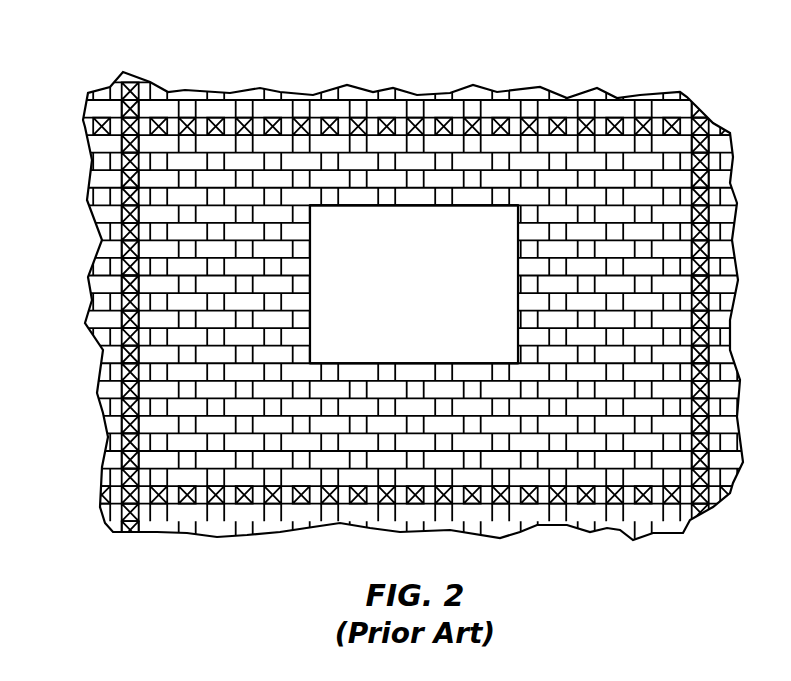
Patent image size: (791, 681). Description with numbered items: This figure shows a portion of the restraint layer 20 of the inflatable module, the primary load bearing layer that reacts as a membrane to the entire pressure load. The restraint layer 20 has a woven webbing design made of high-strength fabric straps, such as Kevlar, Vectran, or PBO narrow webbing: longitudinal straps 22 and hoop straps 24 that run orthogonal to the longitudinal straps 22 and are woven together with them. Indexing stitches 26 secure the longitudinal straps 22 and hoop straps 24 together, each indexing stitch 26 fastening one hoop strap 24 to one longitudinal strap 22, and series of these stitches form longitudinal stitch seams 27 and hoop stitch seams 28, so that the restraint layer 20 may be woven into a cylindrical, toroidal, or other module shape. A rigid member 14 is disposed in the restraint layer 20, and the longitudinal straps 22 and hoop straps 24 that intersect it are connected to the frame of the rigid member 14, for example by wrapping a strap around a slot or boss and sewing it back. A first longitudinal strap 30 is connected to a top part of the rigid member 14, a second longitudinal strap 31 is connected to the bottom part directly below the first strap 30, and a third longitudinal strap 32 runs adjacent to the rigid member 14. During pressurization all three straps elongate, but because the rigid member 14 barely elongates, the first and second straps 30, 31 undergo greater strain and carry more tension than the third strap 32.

The restraint layer 20 is at (395, 296).
The longitudinal straps 22 is at (332, 158).
The hoop straps 24 is at (177, 267).
The indexing stitches 26 is at (530, 522).
The longitudinal stitch seams 27 is at (108, 423).
The hoop stitch seams 28 is at (413, 130).
The first longitudinal strap 30 is at (500, 200).
The second longitudinal strap 31 is at (500, 370).
The rigid member 14 is at (518, 287).
The third longitudinal strap 32 is at (533, 177).